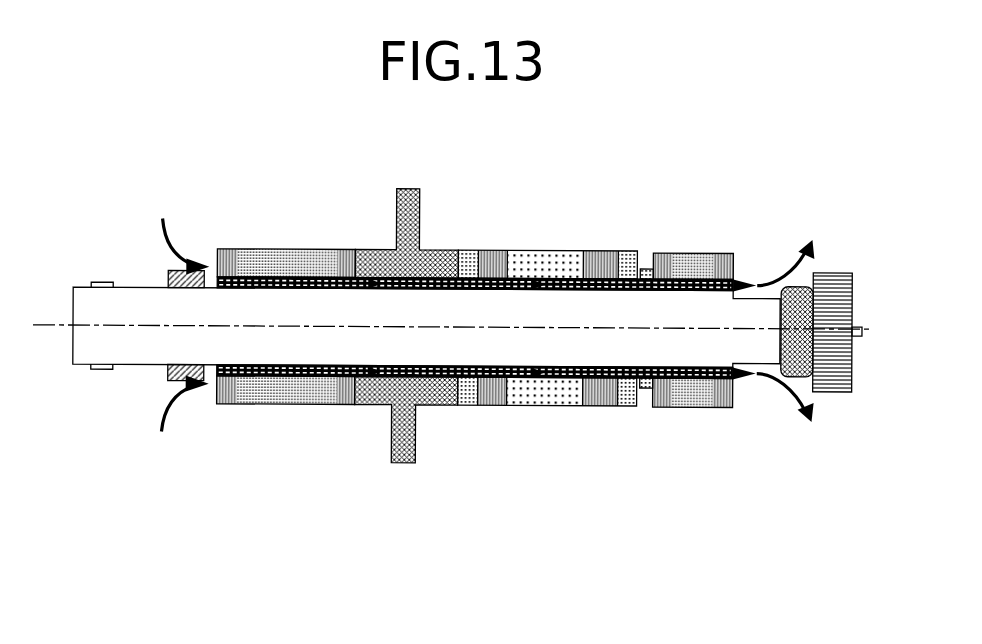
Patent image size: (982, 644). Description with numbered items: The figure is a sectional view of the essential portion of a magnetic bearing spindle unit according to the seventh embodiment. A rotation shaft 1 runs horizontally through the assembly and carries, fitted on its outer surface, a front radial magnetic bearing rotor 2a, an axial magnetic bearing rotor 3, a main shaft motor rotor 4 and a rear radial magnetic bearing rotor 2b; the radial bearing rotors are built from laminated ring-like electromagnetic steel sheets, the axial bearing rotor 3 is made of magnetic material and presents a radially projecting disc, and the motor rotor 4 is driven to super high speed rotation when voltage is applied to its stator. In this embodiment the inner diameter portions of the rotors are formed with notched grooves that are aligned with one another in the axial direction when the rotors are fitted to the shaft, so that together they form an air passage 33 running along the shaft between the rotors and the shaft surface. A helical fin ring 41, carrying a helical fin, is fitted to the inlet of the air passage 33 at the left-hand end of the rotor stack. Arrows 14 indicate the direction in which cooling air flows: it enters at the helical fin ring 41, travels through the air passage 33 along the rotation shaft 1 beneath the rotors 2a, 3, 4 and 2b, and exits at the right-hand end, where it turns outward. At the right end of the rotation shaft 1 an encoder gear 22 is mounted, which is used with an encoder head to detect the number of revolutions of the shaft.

The rotation shaft 1 is at (97, 300).
The front radial magnetic bearing rotor 2a is at (258, 251).
The rear radial magnetic bearing rotor 2b is at (692, 258).
The axial magnetic bearing rotor 3 is at (397, 221).
The main shaft motor rotor 4 is at (528, 268).
The air passage 33 is at (565, 290).
The helical fin ring 41 is at (168, 273).
The arrows 14 is at (165, 393).
The encoder gear 22 is at (853, 287).